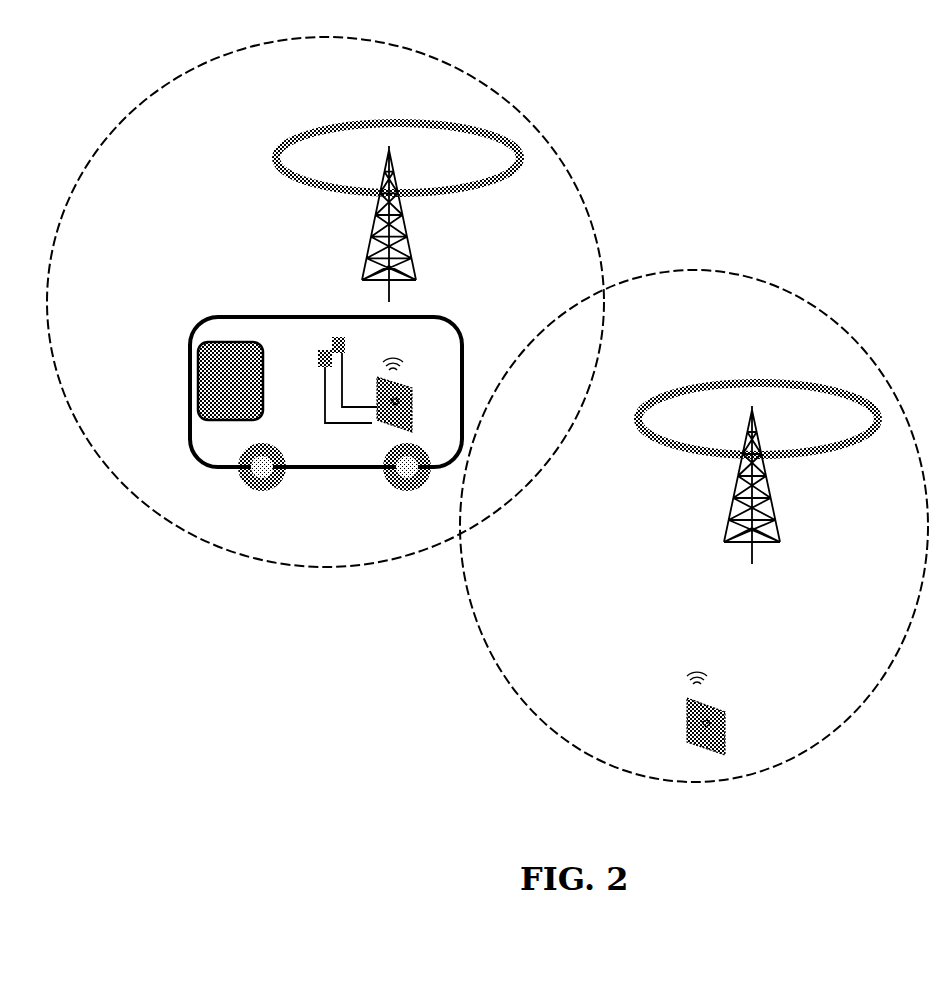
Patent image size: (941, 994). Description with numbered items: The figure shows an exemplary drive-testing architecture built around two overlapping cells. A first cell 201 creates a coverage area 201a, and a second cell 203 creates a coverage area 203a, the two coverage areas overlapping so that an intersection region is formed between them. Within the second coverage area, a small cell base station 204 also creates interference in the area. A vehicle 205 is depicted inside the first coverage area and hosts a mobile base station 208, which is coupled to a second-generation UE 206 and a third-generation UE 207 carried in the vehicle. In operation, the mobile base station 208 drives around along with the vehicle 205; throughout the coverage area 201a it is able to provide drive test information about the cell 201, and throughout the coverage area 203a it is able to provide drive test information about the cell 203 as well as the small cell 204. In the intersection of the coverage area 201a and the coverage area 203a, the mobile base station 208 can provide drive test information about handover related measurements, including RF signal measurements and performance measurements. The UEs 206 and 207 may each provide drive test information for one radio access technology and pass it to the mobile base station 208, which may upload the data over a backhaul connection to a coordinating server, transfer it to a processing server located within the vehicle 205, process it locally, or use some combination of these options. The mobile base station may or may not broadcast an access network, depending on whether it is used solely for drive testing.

The coverage area 201a is at (155, 73).
The cell 201 is at (365, 247).
The coverage area 203a is at (695, 262).
The cell 203 is at (772, 485).
The small cell base station 204 is at (683, 705).
The vehicle 205 is at (312, 473).
The 2G UE 206 is at (332, 328).
The 3G UE 207 is at (323, 342).
The mobile base station 208 is at (422, 395).